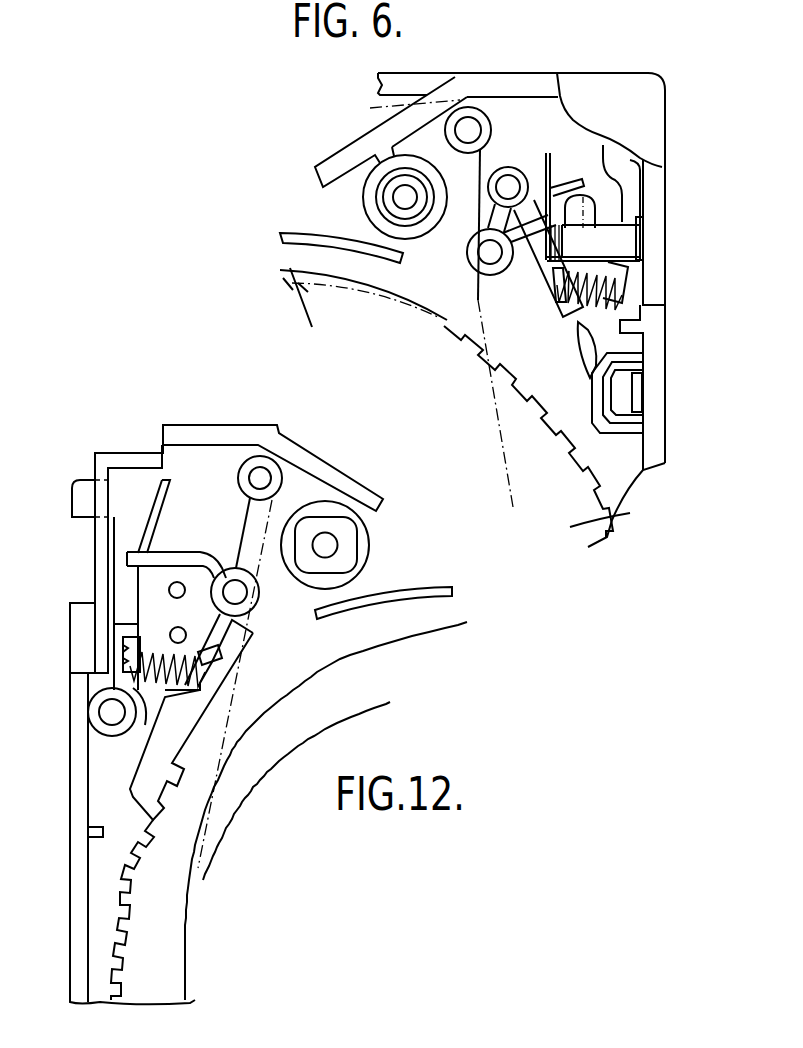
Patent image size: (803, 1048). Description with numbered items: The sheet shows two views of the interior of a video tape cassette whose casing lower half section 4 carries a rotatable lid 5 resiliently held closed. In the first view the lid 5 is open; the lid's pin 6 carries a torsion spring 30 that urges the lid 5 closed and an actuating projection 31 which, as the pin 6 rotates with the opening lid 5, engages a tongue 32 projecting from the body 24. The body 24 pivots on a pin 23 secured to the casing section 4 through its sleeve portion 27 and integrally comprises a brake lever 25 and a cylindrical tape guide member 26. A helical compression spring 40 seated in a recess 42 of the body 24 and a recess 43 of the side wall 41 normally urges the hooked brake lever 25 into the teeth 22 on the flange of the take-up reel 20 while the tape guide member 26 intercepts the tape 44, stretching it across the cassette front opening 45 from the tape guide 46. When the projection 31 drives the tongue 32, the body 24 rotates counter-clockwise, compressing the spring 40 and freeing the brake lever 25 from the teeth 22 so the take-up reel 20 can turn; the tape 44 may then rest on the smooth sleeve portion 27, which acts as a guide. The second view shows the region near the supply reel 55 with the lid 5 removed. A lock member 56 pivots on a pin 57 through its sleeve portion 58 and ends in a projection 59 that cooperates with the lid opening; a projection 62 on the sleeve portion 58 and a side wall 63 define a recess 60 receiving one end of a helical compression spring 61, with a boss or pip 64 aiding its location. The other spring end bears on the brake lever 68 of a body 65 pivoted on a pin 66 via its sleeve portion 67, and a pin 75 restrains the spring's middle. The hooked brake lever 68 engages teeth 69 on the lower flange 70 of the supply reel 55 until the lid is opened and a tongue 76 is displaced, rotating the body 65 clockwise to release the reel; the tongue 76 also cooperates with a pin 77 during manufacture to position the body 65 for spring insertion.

In FIG. 6, the lower half section 4 is at (660, 390).
In FIG. 6, the lid 5 is at (653, 190).
In FIG. 6, the pin 6 is at (630, 247).
In FIG. 6, the take-up reel 20 is at (586, 522).
In FIG. 6, the teeth 22 is at (300, 270).
In FIG. 6, the pin 23 is at (508, 176).
In FIG. 6, the body 24 is at (553, 317).
In FIG. 6, the brake lever 25 is at (584, 328).
In FIG. 6, the tape guide member 26 is at (467, 255).
In FIG. 6, the sleeve portion 27 is at (490, 184).
In FIG. 6, the torsion spring 30 is at (622, 246).
In FIG. 6, the actuating projection 31 is at (585, 212).
In FIG. 6, the tongue 32 is at (573, 172).
In FIG. 6, the helical compression spring 40 is at (607, 294).
In FIG. 6, the side wall 41 is at (653, 360).
In FIG. 6, the recess 42 is at (560, 290).
In FIG. 6, the recess 43 is at (607, 280).
In FIG. 6, the tape 44 is at (472, 294).
In FIG. 12, the tape 44 is at (246, 508).
In FIG. 6, the cassette front opening 45 is at (348, 92).
In FIG. 12, the cassette front opening 45 is at (360, 455).
In FIG. 6, the tape guide 46 is at (470, 108).
In FIG. 12, the supply reel 55 is at (168, 941).
In FIG. 12, the lock member 56 is at (130, 585).
In FIG. 12, the pin 57 is at (108, 714).
In FIG. 12, the sleeve portion 58 is at (97, 703).
In FIG. 12, the projection 59 is at (80, 490).
In FIG. 12, the recess 60 is at (125, 640).
In FIG. 12, the helical compression spring 61 is at (203, 648).
In FIG. 12, the projection 62 is at (148, 705).
In FIG. 12, the side wall 63 is at (127, 622).
In FIG. 12, the boss or pip 64 is at (125, 664).
In FIG. 12, the body 65 is at (238, 652).
In FIG. 12, the pin 66 is at (238, 590).
In FIG. 12, the sleeve portion 67 is at (237, 567).
In FIG. 12, the brake lever 68 is at (165, 744).
In FIG. 12, the teeth 69 is at (170, 783).
In FIG. 12, the lower flange 70 is at (114, 886).
In FIG. 12, the pin 75 is at (177, 627).
In FIG. 12, the tongue 76 is at (168, 553).
In FIG. 12, the pin 77 is at (183, 582).